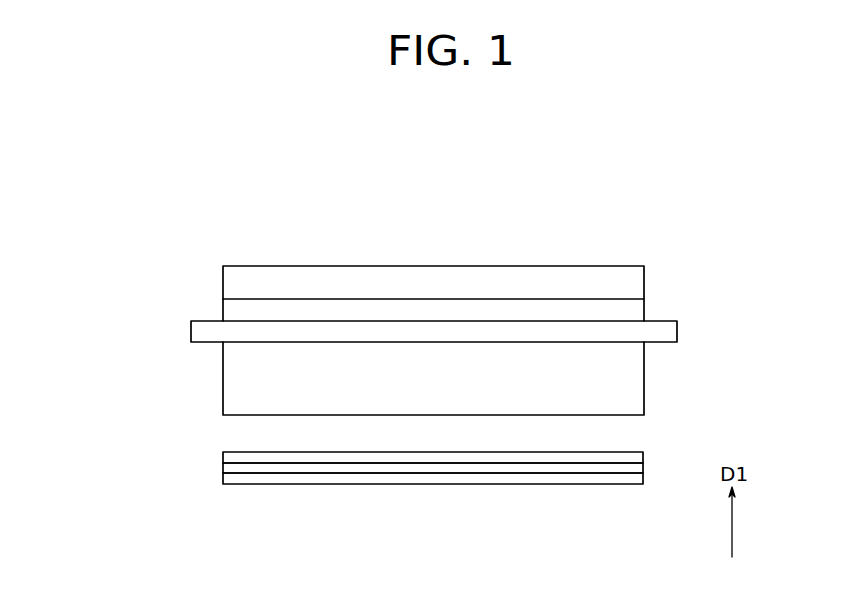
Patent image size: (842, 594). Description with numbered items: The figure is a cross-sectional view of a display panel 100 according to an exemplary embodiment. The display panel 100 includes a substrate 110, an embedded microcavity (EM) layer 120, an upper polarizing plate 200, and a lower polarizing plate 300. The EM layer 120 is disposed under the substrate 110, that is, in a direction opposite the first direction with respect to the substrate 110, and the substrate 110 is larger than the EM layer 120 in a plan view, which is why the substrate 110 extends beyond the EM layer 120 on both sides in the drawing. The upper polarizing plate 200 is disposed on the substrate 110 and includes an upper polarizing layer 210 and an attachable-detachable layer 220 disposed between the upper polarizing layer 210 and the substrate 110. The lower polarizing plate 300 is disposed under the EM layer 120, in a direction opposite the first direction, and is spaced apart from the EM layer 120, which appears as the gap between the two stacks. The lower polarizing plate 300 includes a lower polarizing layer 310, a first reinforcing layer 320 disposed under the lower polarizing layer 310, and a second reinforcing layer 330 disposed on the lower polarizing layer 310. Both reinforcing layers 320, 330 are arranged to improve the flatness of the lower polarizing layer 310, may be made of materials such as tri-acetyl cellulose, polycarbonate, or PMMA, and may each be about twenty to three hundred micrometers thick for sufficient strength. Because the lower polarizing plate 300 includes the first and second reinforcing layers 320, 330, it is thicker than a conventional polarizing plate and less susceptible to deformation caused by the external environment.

The display panel 100 is at (79, 263).
The upper polarizing plate 200 is at (136, 263).
The upper polarizing layer 210 is at (223, 274).
The attachable-detachable layer 220 is at (223, 304).
The substrate 110 is at (191, 330).
The embedded microcavity layer 120 is at (223, 378).
The lower polarizing plate 300 is at (134, 428).
The lower polarizing layer 310 is at (223, 468).
The first reinforcing layer 320 is at (223, 479).
The second reinforcing layer 330 is at (223, 457).